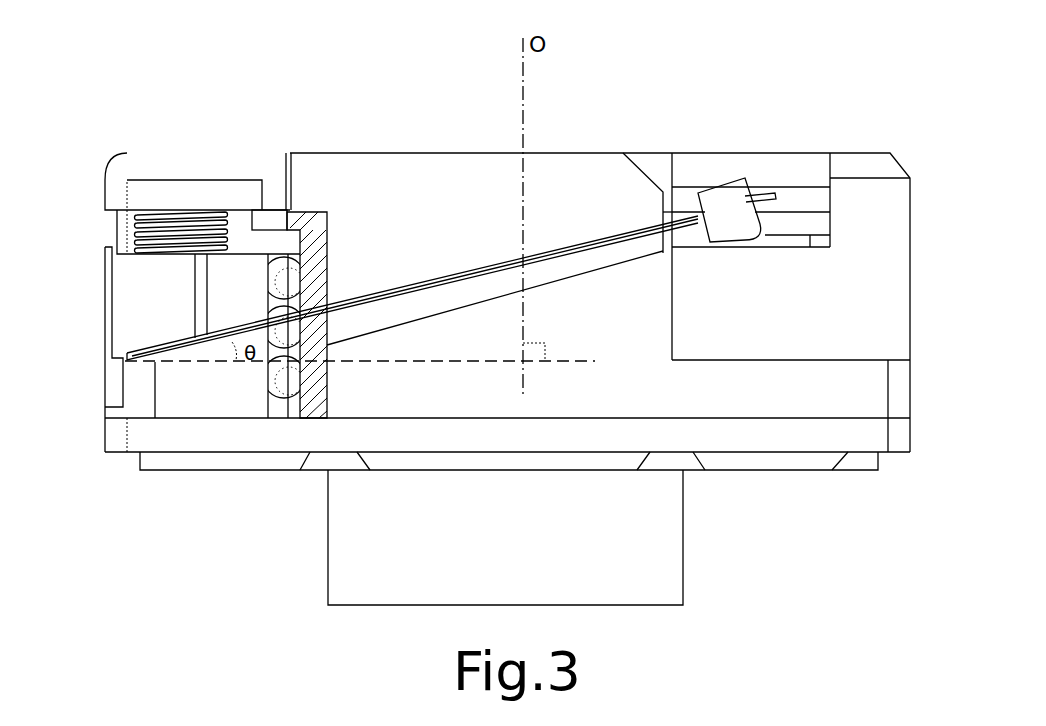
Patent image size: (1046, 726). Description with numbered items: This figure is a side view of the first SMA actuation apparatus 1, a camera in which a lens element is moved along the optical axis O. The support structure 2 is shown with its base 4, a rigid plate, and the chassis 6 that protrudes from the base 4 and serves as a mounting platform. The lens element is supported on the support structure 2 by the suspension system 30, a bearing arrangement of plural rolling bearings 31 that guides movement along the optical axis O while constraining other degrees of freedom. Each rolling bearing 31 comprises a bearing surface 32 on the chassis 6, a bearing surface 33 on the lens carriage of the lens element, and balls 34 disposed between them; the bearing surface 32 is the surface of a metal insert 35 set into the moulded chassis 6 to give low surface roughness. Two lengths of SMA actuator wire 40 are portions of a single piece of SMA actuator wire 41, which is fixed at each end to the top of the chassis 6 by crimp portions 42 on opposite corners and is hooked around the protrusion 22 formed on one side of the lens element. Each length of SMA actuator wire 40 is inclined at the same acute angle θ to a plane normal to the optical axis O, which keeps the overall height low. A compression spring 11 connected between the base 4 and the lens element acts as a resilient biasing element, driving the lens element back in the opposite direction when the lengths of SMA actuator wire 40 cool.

The SMA actuation apparatus 1 is at (560, 126).
The support structure 2 is at (860, 287).
The base 4 is at (893, 437).
The chassis 6 is at (878, 332).
The compression spring 11 is at (135, 232).
The protrusion 22 is at (150, 314).
The suspension system 30 is at (271, 434).
The rolling bearing 31 is at (277, 366).
The bearing surface 32 is at (318, 232).
The bearing surface 33 is at (270, 300).
The ball 34 is at (288, 275).
The metal insert 35 is at (327, 292).
The length of SMA actuator wire 40 is at (435, 287).
The piece of SMA actuator wire 41 is at (475, 270).
The crimp portion 42 is at (722, 202).